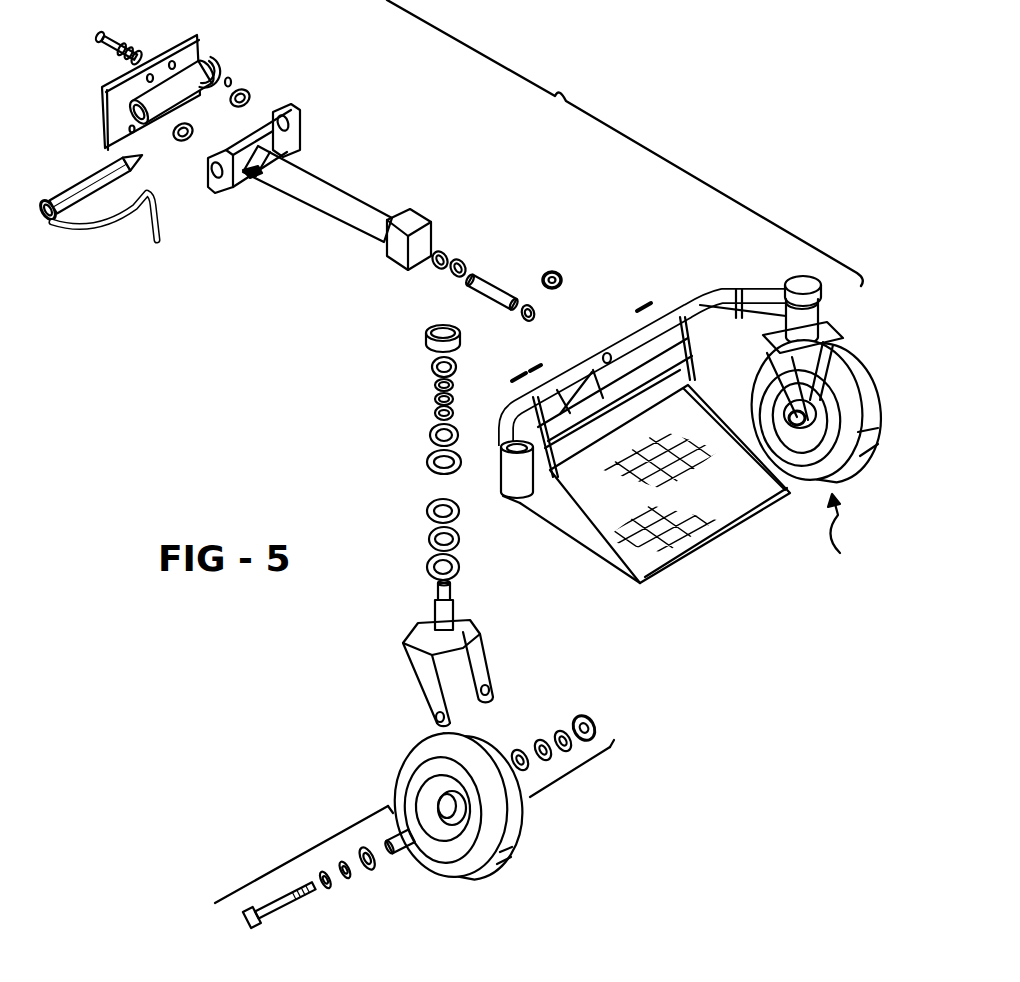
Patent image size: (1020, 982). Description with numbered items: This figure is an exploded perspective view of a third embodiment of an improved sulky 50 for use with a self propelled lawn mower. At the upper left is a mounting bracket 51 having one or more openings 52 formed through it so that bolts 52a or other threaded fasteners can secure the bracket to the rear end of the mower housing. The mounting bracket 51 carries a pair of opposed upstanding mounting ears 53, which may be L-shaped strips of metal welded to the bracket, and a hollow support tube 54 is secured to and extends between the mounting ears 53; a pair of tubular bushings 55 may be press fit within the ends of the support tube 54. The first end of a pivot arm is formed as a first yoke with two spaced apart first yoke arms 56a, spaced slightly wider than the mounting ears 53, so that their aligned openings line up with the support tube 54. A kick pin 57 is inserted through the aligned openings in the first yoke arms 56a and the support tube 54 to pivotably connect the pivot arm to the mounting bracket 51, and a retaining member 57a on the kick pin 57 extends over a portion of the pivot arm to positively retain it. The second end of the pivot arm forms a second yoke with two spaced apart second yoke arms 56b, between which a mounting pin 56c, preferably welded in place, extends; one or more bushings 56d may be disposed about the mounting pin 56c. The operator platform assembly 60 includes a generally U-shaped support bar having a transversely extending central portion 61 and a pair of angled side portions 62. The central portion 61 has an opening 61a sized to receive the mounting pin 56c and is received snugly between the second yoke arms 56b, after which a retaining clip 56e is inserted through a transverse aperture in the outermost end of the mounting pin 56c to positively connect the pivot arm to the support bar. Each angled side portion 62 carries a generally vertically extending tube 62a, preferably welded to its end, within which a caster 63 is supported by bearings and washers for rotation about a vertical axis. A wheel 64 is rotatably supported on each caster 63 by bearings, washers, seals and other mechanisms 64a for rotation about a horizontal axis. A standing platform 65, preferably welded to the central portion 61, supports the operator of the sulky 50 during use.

The sulky 50 is at (625, 143).
The mounting bracket 51 is at (102, 124).
The openings 52 is at (200, 92).
The bolts 52a is at (104, 52).
The mounting ears 53 is at (229, 83).
The support tube 54 is at (208, 60).
The tubular bushings 55 is at (250, 100).
The first yoke arms 56a is at (296, 122).
The second yoke arms 56b is at (418, 220).
The mounting pin 56c is at (508, 290).
The bushings 56d is at (445, 250).
The retaining clip 56e is at (560, 279).
The kick pin 57 is at (88, 168).
The retaining member 57a is at (95, 229).
The operator platform assembly 60 is at (845, 536).
The central portion 61 is at (580, 366).
The opening 61a is at (607, 352).
The angled side portions 62 is at (760, 293).
The tubes 62a is at (825, 298).
The casters 63 is at (768, 392).
The wheel 64 is at (867, 372).
The bearings, washers and seals 64a is at (414, 821).
The standing platform 65 is at (700, 540).